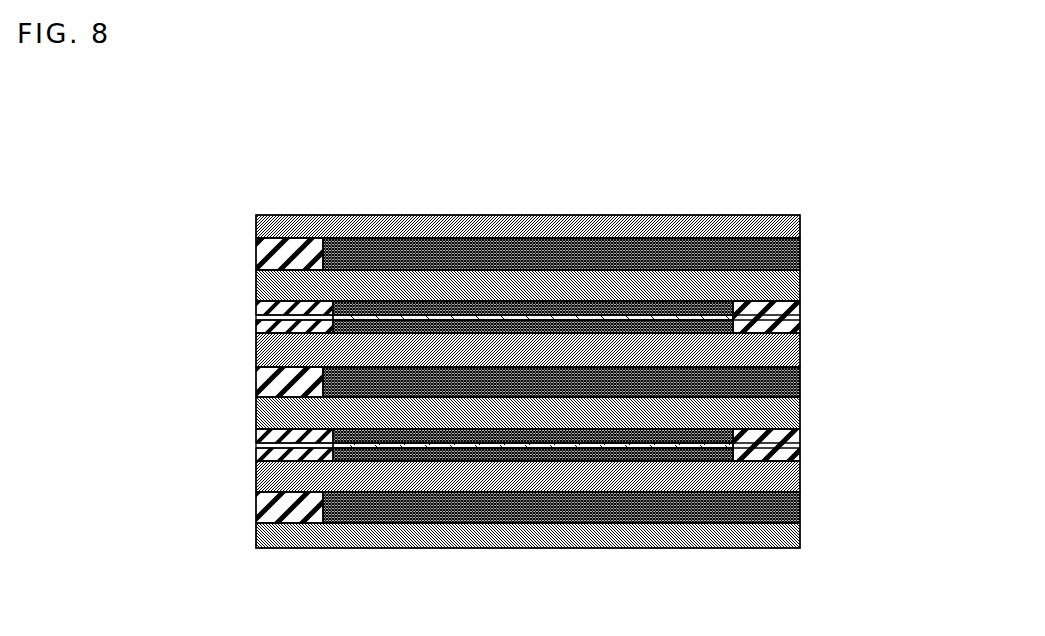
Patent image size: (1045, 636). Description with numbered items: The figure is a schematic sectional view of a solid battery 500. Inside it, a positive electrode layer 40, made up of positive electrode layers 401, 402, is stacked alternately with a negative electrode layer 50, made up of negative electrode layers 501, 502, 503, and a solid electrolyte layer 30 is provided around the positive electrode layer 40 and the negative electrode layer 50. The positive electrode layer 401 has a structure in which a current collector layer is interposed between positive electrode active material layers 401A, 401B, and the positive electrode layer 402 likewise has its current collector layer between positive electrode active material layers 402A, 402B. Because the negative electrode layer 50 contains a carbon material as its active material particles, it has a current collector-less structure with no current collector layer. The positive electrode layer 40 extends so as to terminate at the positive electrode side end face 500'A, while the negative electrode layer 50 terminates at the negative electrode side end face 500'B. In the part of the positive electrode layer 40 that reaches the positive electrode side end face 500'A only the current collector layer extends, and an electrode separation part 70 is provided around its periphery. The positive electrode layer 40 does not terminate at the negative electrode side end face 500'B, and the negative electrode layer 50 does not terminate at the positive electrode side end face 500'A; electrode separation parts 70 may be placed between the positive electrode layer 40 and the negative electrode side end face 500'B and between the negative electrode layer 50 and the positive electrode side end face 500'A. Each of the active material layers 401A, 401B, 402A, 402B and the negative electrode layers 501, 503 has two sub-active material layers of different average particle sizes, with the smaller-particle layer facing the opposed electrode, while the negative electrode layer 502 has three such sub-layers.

The solid battery 500 is at (497, 303).
The positive electrode side end face 500'A is at (146, 563).
The negative electrode side end face 500'B is at (875, 582).
The solid electrolyte layer 30 is at (787, 227).
The negative electrode layer 50 is at (559, 360).
The negative electrode layer 501 is at (526, 239).
The negative electrode layer 502 is at (787, 382).
The negative electrode layer 503 is at (787, 505).
The positive electrode layer 40 is at (429, 381).
The positive electrode layer 401 is at (458, 303).
The positive electrode layer 402 is at (457, 456).
The positive electrode active material layer 401A is at (352, 310).
The positive electrode active material layer 401B is at (490, 343).
The positive electrode active material layer 402A is at (352, 432).
The positive electrode active material layer 402B is at (490, 479).
The electrode separation part 70 is at (272, 249).